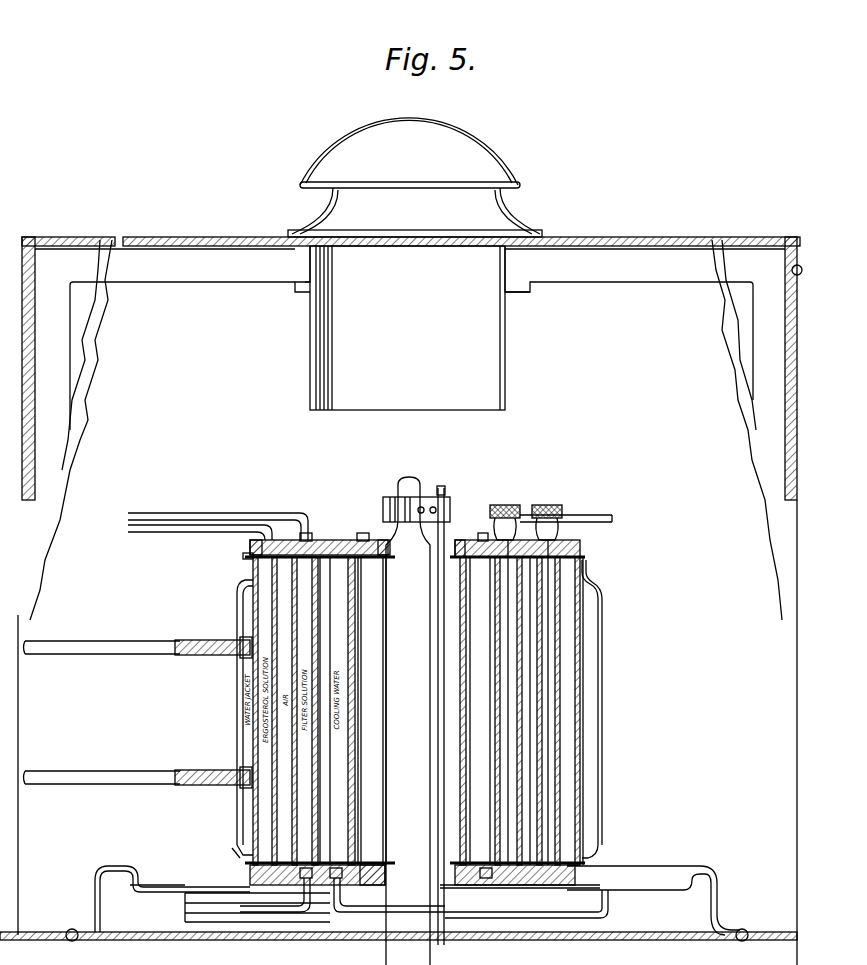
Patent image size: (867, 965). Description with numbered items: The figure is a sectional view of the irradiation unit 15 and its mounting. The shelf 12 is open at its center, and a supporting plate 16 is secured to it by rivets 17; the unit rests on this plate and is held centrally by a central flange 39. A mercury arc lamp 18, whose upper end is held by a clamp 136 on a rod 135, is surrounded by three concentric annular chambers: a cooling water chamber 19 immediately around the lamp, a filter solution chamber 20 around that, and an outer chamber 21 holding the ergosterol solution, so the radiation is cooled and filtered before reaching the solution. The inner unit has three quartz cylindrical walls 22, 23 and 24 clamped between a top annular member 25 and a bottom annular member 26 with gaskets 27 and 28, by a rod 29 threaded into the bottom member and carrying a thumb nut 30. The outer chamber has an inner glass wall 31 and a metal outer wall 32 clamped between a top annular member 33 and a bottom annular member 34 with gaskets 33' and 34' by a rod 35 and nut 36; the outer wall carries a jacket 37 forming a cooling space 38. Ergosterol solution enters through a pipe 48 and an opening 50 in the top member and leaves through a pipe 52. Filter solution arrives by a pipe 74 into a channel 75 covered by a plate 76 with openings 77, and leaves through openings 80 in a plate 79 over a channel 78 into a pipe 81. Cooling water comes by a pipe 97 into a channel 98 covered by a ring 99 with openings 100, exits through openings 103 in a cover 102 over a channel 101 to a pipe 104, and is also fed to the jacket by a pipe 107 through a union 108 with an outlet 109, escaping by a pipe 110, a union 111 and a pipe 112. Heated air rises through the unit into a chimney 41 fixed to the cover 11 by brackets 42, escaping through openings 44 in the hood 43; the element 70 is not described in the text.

The cover 11 is at (618, 237).
The shelf 12 is at (757, 935).
The irradiation unit 15 is at (492, 862).
The supporting plate 16 is at (645, 870).
The rivets 17 is at (740, 928).
The mercury arc lamp 18 is at (395, 612).
The cooling water chamber 19 is at (369, 711).
The filter solution chamber 20 is at (308, 633).
The outer chamber 21 is at (458, 560).
The cylindrical wall 22 is at (497, 596).
The cylindrical wall 23 is at (518, 625).
The cylindrical wall 24 is at (538, 637).
The top annular member 25 is at (335, 540).
The bottom annular member 26 is at (502, 888).
The gasket 27 is at (255, 578).
The gasket 28 is at (452, 862).
The rod 29 is at (505, 675).
The thumb nut 30 is at (492, 522).
The inner cylindrical glass wall 31 is at (572, 554).
The outer wall 32 is at (583, 572).
The top annular member 33 is at (565, 517).
The gasket 33' is at (235, 558).
The bottom annular member 34 is at (520, 895).
The gasket 34' is at (585, 853).
The rod 35 is at (555, 652).
The nut 36 is at (548, 506).
The jacket 37 is at (585, 680).
The jacket space 38 is at (570, 666).
The central flange 39 is at (452, 885).
The chimney 41 is at (505, 372).
The brackets 42 is at (522, 278).
The hood 43 is at (470, 150).
The exhaust openings 44 is at (512, 186).
The pipe 48 is at (155, 535).
The opening 50 is at (252, 548).
The pipe 52 is at (540, 913).
The bottom block 70 is at (310, 874).
The pipe 74 is at (283, 895).
The channel 75 is at (331, 845).
The plate 76 is at (315, 865).
The openings 77 is at (321, 830).
The channel 78 is at (312, 538).
The plate 79 is at (282, 711).
The openings 80 is at (295, 592).
The pipe 81 is at (284, 518).
The pipe 97 is at (310, 918).
The channel 98 is at (336, 895).
The ring 99 is at (372, 863).
The openings 100 is at (336, 866).
The channel 101 is at (365, 530).
The cover 102 is at (374, 545).
The openings 103 is at (373, 711).
The pipe 104 is at (586, 524).
The pipe 107 is at (130, 784).
The union 108 is at (232, 790).
The outlet 109 is at (240, 813).
The pipe 110 is at (240, 606).
The union 111 is at (228, 658).
The pipe 112 is at (102, 650).
The rod 135 is at (447, 489).
The clamp 136 is at (392, 498).